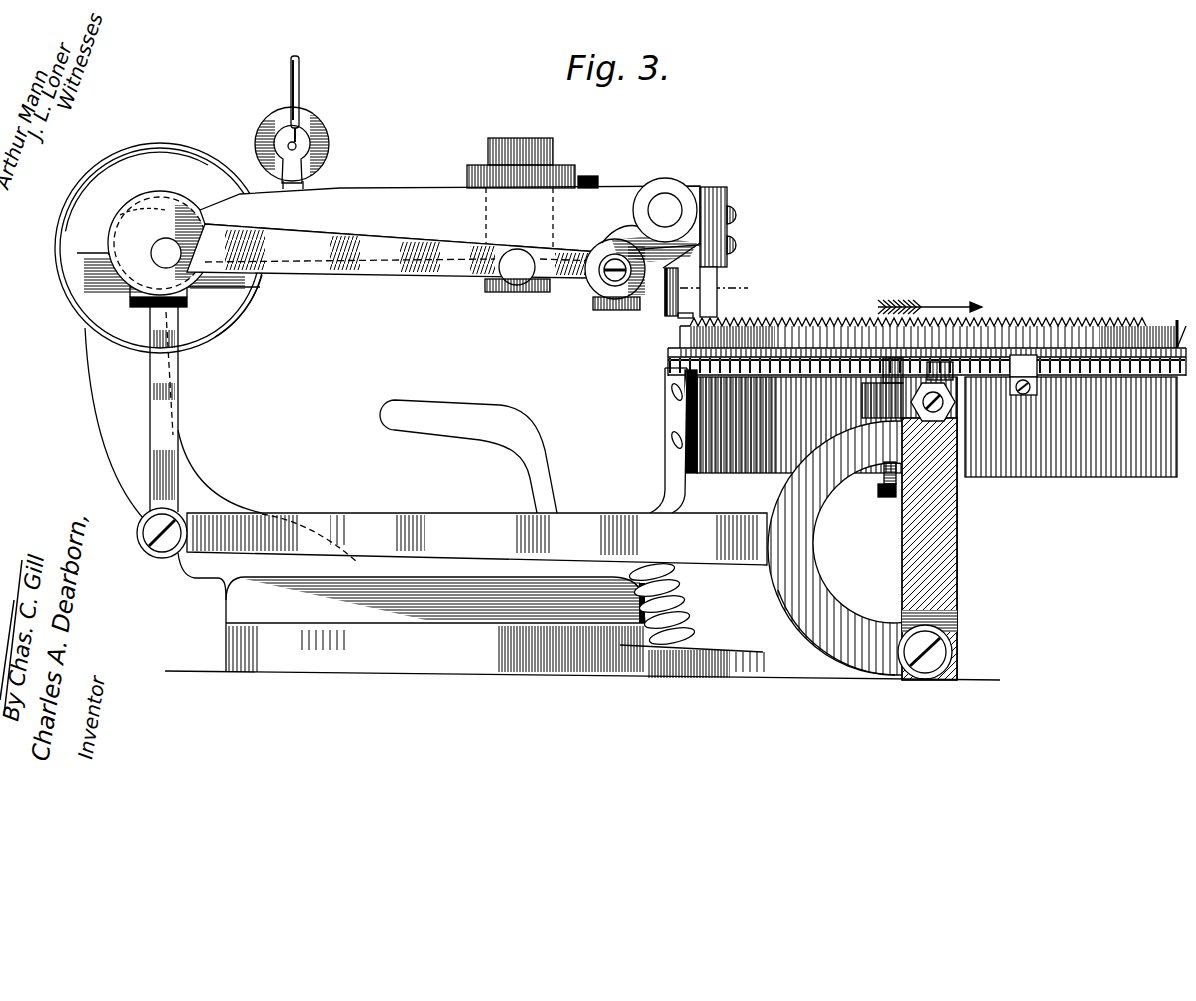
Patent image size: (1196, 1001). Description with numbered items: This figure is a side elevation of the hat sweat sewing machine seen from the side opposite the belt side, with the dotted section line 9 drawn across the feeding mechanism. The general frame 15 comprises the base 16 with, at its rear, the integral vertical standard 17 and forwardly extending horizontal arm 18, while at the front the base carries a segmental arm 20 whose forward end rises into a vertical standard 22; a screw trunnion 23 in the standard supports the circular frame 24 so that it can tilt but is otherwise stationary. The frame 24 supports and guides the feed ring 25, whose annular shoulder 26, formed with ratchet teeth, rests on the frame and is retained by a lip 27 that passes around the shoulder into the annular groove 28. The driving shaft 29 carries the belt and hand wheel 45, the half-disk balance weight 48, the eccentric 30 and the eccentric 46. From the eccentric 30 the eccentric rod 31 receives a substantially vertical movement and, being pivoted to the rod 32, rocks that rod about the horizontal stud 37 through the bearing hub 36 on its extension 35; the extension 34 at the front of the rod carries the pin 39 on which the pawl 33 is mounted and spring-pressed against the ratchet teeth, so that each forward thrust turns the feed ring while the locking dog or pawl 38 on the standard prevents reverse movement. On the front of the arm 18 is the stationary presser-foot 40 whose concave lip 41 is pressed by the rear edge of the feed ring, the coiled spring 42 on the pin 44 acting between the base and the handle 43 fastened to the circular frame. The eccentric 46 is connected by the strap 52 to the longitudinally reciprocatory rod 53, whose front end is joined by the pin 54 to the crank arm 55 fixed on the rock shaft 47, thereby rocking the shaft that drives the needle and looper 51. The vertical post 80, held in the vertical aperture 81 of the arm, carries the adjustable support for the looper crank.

The section line 9— 9 is at (713, 244).
The general frame 15 is at (223, 502).
The base 16 is at (582, 616).
The vertical standard 17 is at (131, 412).
The horizontal arm 18 is at (450, 160).
The segmental arm 20 is at (715, 662).
The vertical standard 22 is at (946, 557).
The screw trunnion 23 is at (946, 413).
The circular frame 24 is at (1099, 470).
The feed ring 25 is at (933, 333).
The annular shoulder 26 is at (1122, 345).
The lip 27 is at (1028, 362).
The annular groove 28 is at (690, 353).
The driving shaft 29 is at (160, 250).
The eccentric 30 is at (140, 207).
The eccentric rod 31 is at (180, 408).
The rod 32 is at (406, 517).
The pawl 33 is at (893, 370).
The extension 34 is at (818, 478).
The extension 35 is at (846, 622).
The bearing hub 36 is at (951, 645).
The horizontal stud 37 is at (938, 657).
The locking dog or pawl 38 is at (937, 378).
The pin 39 is at (886, 481).
The presser-foot 40 is at (718, 303).
The concave lower end or lip 41 is at (690, 324).
The coiled spring 42 is at (684, 603).
The handle 43 is at (468, 456).
The pin 44 is at (688, 622).
The belt and hand wheel 45 is at (243, 318).
The eccentric 46 is at (173, 213).
The rock shaft 47 is at (668, 209).
The balance weight 48 is at (100, 297).
The looper 51 is at (673, 313).
The strap 52 is at (126, 218).
The reciprocatory rod 53 is at (406, 272).
The pin 54 is at (610, 276).
The crank arm 55 is at (632, 228).
The vertical post 80 is at (521, 153).
The vertical aperture 81 is at (558, 168).